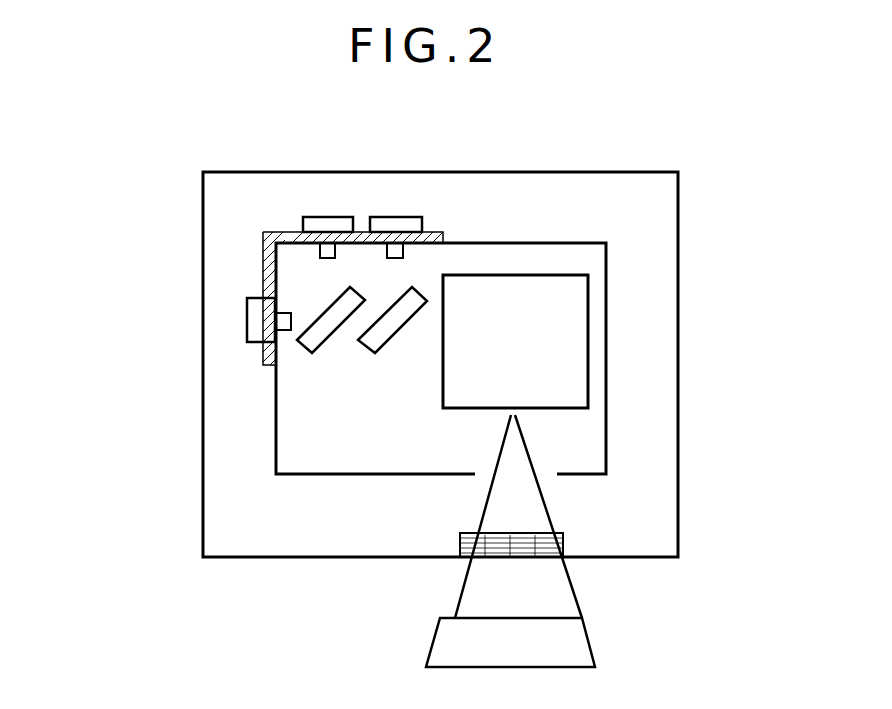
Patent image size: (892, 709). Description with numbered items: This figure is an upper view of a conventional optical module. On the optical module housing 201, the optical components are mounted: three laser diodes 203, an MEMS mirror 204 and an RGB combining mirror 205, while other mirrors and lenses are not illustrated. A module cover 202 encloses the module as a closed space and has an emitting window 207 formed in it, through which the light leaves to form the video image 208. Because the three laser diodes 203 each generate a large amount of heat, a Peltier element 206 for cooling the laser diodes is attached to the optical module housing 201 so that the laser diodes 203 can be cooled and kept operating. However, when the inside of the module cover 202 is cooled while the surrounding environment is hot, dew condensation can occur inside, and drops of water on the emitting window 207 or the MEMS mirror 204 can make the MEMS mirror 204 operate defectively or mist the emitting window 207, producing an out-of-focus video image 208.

The optical module housing 201 is at (605, 296).
The module cover 202 is at (310, 560).
The laser diodes (LDs) 203 is at (387, 218).
The MEMS mirror 204 is at (525, 345).
The RGB combining mirror 205 is at (363, 347).
The Peltier element (for cooling LD) 206 is at (407, 205).
The emitting window 207 is at (563, 543).
The video image 208 is at (590, 638).